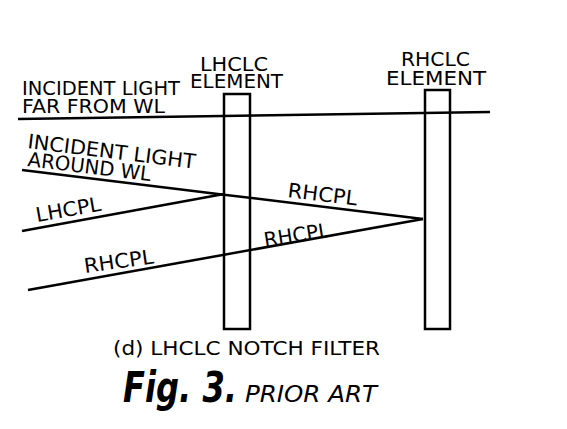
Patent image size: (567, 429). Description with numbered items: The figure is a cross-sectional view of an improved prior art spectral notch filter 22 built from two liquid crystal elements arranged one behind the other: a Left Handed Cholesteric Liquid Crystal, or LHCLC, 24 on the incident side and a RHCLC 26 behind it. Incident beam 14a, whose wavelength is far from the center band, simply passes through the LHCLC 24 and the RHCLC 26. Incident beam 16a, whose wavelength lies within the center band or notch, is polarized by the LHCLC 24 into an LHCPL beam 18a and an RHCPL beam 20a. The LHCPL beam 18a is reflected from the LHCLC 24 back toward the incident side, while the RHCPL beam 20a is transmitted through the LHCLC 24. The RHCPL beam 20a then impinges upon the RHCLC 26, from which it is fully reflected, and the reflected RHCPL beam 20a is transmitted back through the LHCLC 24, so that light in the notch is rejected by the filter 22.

The spectral notch filter 22 is at (337, 166).
The Left Handed Cholesteric Liquid Crystal (LHCLC) 24 is at (252, 101).
The RHCLC 26 is at (425, 93).
The incident beam 14a is at (185, 118).
The incident beam 16a is at (62, 177).
The LHCPL beam 18a is at (155, 208).
The RHCPL beam 20a is at (386, 213).